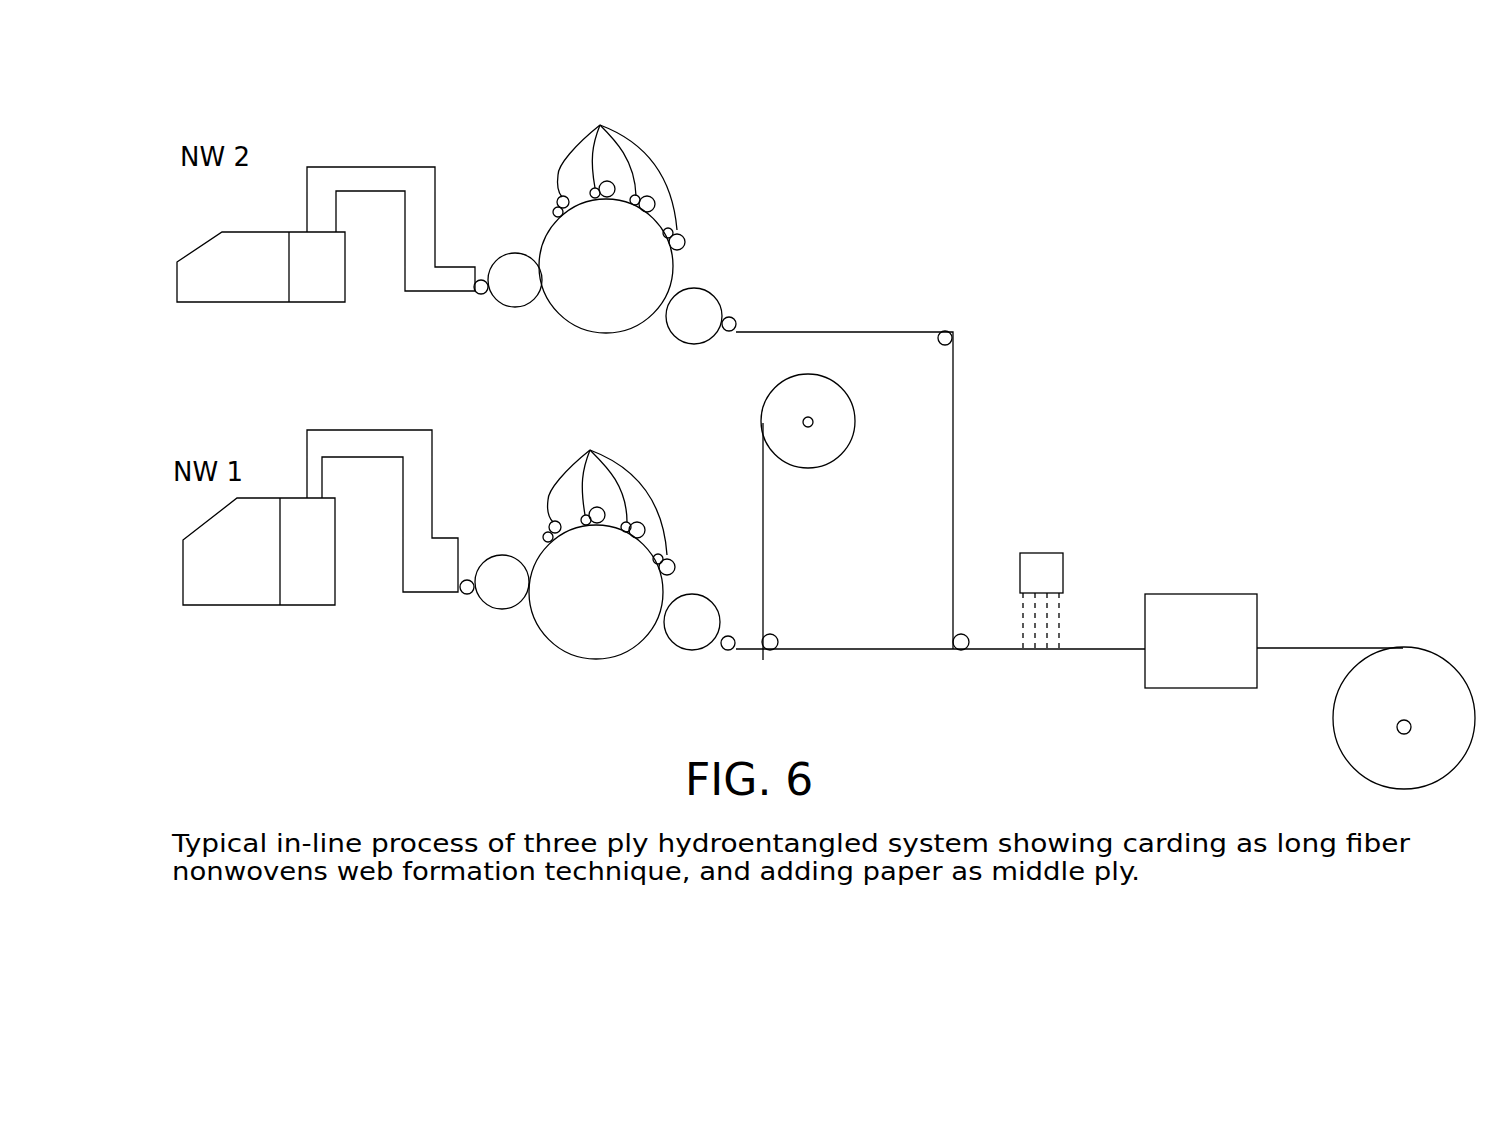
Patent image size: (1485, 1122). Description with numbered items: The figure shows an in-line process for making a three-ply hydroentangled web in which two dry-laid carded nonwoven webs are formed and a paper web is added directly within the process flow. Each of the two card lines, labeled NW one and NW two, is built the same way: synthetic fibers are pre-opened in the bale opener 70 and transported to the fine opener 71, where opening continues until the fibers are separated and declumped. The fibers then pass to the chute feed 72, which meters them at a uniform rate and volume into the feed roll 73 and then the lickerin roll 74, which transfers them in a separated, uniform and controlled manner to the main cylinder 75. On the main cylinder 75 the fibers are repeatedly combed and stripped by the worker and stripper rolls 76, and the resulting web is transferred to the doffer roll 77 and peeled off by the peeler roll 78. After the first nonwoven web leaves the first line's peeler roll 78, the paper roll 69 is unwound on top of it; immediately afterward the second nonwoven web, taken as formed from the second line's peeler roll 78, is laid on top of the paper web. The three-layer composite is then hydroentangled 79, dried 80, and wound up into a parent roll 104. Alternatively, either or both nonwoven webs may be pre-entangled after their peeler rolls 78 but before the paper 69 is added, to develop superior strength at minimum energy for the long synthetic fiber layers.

The paper roll 69 is at (837, 393).
The bale opener 70 is at (218, 255).
The fine opener 71 is at (317, 297).
The chute feed 72 is at (419, 284).
The feed roll 73 is at (483, 280).
The lickerin roll 74 is at (522, 262).
The main cylinder 75 is at (590, 323).
The worker and stripper rolls 76 is at (600, 125).
The doffer roll 77 is at (707, 598).
The peeler roll 78 is at (730, 330).
The hydroentanglement 79 is at (705, 299).
The dryer 80 is at (1225, 603).
The parent roll 104 is at (1335, 732).